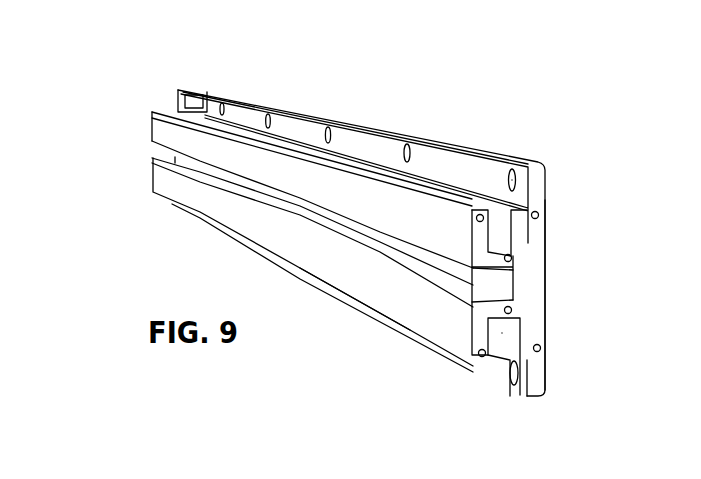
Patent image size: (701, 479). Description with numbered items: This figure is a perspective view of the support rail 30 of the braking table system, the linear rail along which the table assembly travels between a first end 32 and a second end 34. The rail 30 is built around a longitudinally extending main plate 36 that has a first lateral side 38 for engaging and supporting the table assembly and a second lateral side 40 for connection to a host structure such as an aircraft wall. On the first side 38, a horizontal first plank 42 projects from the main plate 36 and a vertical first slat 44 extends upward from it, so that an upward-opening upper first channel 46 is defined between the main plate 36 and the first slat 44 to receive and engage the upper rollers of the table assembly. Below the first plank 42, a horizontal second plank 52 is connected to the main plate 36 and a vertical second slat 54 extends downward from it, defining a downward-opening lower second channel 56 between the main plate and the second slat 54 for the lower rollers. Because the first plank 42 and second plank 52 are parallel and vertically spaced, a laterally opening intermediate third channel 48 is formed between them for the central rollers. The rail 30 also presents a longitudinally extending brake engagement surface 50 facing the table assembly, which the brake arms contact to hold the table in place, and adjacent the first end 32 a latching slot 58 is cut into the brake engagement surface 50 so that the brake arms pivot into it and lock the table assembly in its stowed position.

The support rail 30 is at (172, 62).
The first end 32 is at (159, 222).
The second end 34 is at (545, 418).
The main plate 36 is at (360, 124).
The first lateral side 38 is at (120, 112).
The second lateral side 40 is at (246, 93).
The first plank 42 is at (495, 258).
The first slat 44 is at (423, 190).
The upper first channel 46 is at (507, 211).
The intermediate third channel 48 is at (485, 289).
The brake engagement surface 50 is at (250, 117).
The second plank 52 is at (498, 312).
The second slat 54 is at (380, 298).
The lower second channel 56 is at (509, 345).
The latching slot 58 is at (193, 100).